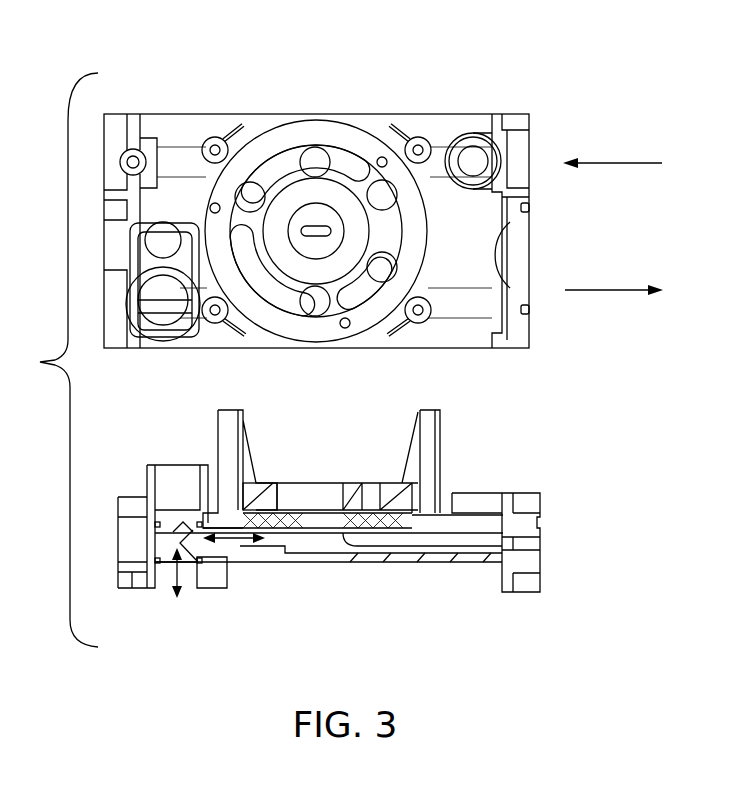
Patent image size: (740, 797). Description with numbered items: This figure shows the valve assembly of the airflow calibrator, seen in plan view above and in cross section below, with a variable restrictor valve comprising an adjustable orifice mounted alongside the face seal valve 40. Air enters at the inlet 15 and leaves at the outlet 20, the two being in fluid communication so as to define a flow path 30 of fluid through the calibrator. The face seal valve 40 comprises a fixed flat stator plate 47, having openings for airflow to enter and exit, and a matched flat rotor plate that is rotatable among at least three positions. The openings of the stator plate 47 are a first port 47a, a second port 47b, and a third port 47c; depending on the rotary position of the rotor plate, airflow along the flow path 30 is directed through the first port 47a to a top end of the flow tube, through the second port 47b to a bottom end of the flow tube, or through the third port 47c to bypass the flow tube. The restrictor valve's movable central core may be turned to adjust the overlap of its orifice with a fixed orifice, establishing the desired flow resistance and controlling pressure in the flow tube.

The face seal valve 40 is at (335, 80).
The stator plate 47 is at (290, 522).
The first port 47a is at (383, 238).
The second port 47b is at (280, 173).
The third port 47c is at (288, 305).
The flow path 30 is at (228, 535).
The inlet 15 is at (622, 163).
The outlet 20 is at (615, 290).